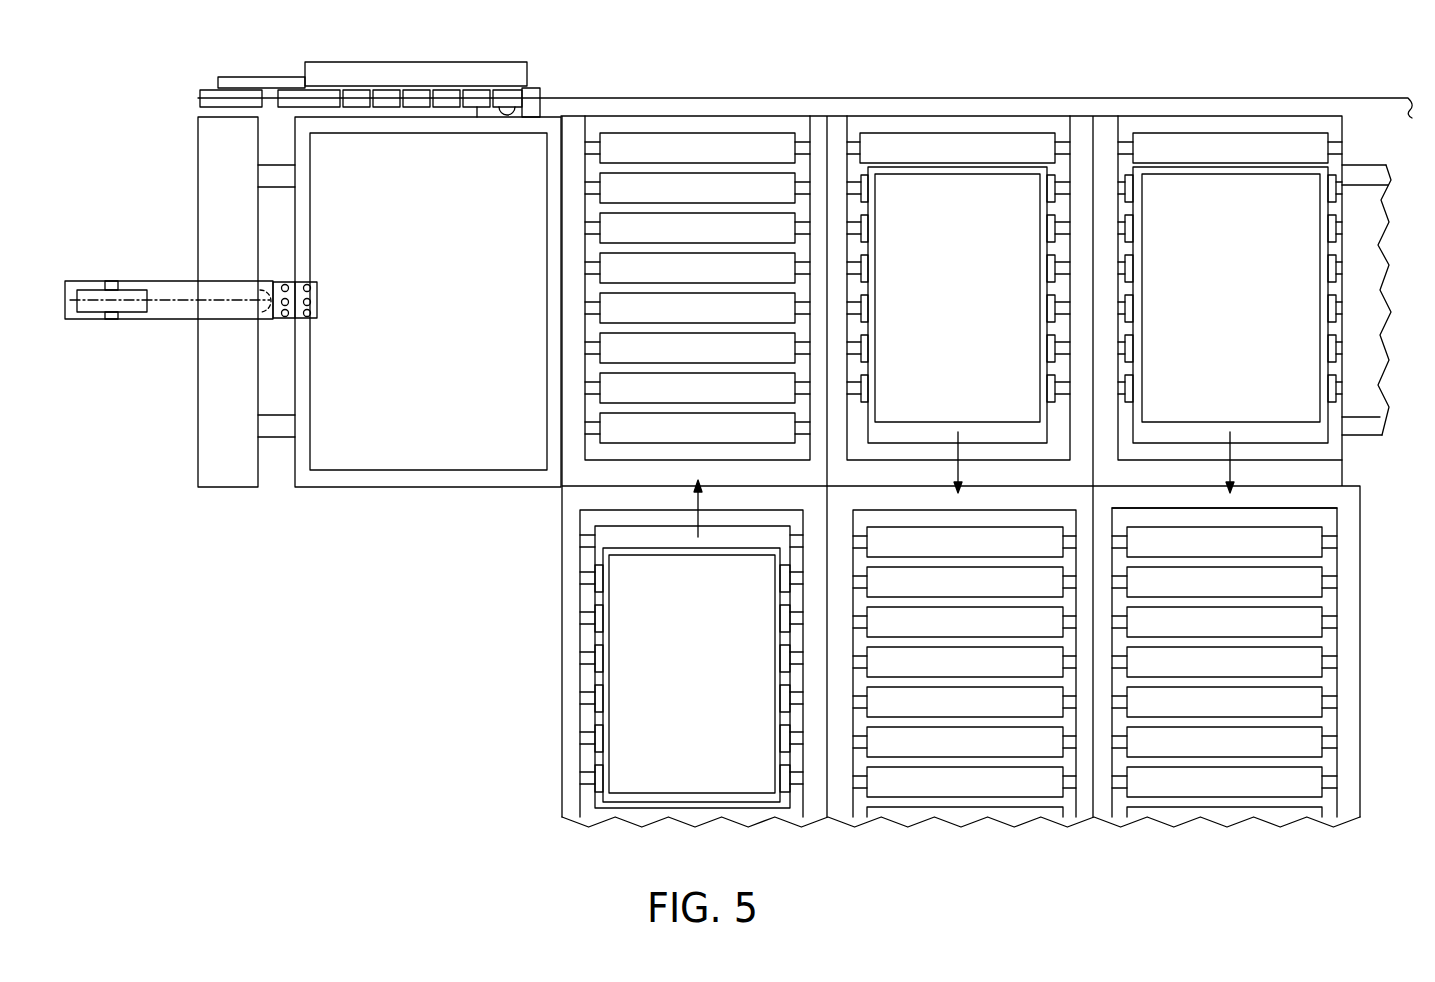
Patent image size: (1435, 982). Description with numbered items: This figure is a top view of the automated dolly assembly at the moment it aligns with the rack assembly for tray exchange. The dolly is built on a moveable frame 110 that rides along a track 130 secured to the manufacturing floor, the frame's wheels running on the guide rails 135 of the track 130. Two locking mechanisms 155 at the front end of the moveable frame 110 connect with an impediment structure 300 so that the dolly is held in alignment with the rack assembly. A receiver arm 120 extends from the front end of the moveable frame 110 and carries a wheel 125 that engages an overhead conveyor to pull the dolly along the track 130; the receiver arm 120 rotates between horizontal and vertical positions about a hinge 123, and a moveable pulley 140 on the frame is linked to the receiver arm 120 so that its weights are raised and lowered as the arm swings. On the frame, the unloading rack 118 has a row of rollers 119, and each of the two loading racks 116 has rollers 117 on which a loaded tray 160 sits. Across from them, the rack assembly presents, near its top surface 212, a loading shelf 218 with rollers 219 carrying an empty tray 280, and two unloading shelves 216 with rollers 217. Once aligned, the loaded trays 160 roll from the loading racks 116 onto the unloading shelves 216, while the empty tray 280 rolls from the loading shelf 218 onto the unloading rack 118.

The moveable pulley 140 is at (548, 68).
The impediment structure 300 is at (206, 145).
The moveable frame 110 is at (368, 125).
The locking mechanism 155 is at (275, 177).
The receiver arm 120 is at (172, 290).
The wheel 125 is at (85, 293).
The hinge 123 is at (318, 300).
The unloading rack 118 is at (770, 125).
The rollers 119 is at (652, 143).
The loading rack 116 is at (1030, 125).
The rollers 117 is at (952, 143).
The loaded tray 160 is at (980, 313).
The guide rails 135 is at (1355, 165).
The track 130 is at (1355, 408).
The loading shelf 218 is at (703, 837).
The empty tray 280 is at (722, 691).
The rollers 219 is at (592, 690).
The unloading shelf 216 is at (965, 837).
The top surface 212 is at (1348, 550).
The rollers 217 is at (1318, 738).